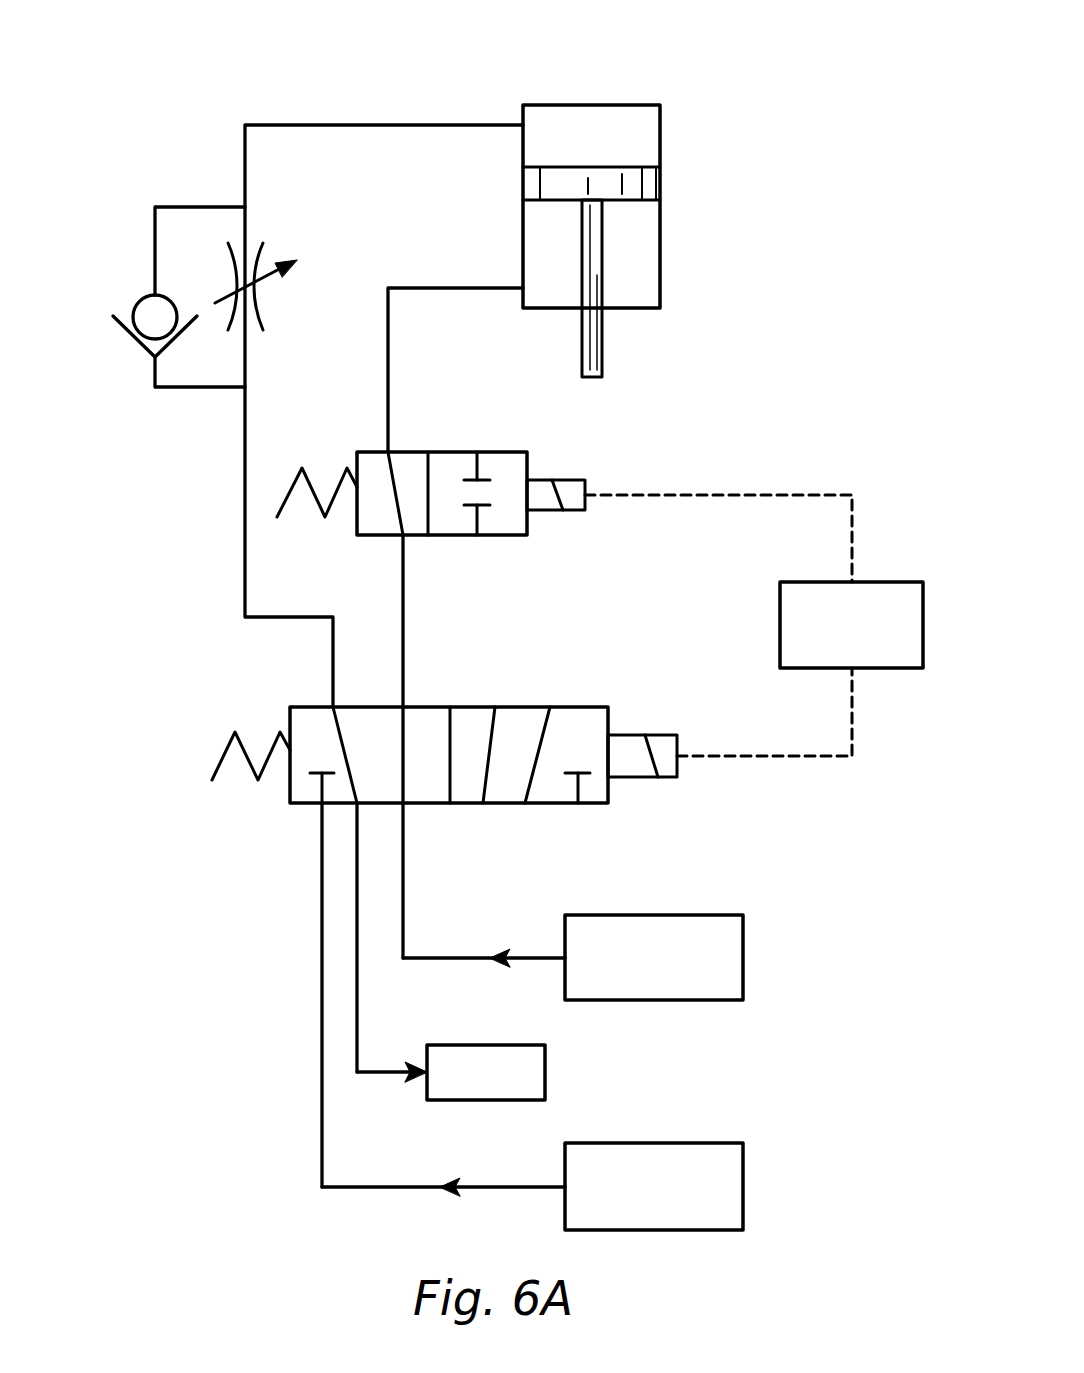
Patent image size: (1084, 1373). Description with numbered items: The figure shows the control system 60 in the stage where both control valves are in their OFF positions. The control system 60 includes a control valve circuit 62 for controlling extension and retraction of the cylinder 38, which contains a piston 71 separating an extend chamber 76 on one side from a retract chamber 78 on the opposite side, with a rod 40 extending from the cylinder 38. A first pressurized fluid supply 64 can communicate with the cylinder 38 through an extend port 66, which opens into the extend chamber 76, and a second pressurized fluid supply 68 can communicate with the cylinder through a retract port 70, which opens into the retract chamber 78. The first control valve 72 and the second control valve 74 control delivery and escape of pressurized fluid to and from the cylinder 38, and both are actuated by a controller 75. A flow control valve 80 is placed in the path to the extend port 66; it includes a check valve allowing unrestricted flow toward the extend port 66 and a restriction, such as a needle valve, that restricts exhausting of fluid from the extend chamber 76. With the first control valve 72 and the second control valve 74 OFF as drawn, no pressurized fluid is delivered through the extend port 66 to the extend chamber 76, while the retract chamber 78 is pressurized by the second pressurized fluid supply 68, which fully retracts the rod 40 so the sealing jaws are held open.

The control system 60 is at (790, 75).
The control valve circuit 62 is at (200, 575).
The first pressurized fluid supply 64 is at (670, 1143).
The extend port 66 is at (477, 125).
The second pressurized fluid supply 68 is at (665, 915).
The retract port 70 is at (475, 288).
The piston 71 is at (630, 182).
The first control valve 72 is at (580, 707).
The second control valve 74 is at (502, 535).
The controller 75 is at (892, 582).
The extend chamber 76 is at (613, 130).
The retract chamber 78 is at (625, 265).
The flow control valve 80 is at (183, 268).
The cylinder 38 is at (660, 232).
The rod 40 is at (600, 338).